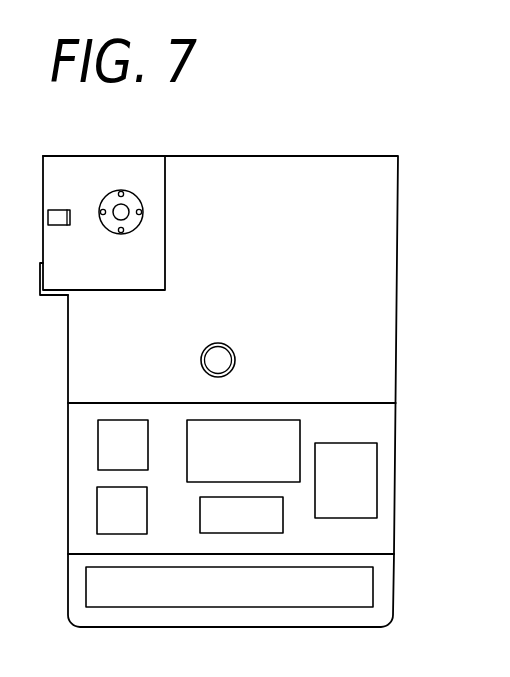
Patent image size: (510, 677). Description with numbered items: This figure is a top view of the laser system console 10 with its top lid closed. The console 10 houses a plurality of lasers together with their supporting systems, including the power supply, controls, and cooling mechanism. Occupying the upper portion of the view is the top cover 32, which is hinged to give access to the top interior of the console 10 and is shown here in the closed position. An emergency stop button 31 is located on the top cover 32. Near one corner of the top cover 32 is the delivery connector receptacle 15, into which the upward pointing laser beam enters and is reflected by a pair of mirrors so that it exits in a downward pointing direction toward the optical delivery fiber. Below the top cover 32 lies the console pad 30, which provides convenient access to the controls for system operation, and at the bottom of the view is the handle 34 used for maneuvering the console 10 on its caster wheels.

The console 10 is at (428, 443).
The delivery connector receptacle 15 is at (153, 163).
The console pad 30 is at (385, 487).
The emergency stop button 31 is at (237, 357).
The top cover 32 is at (380, 279).
The handle 34 is at (387, 588).